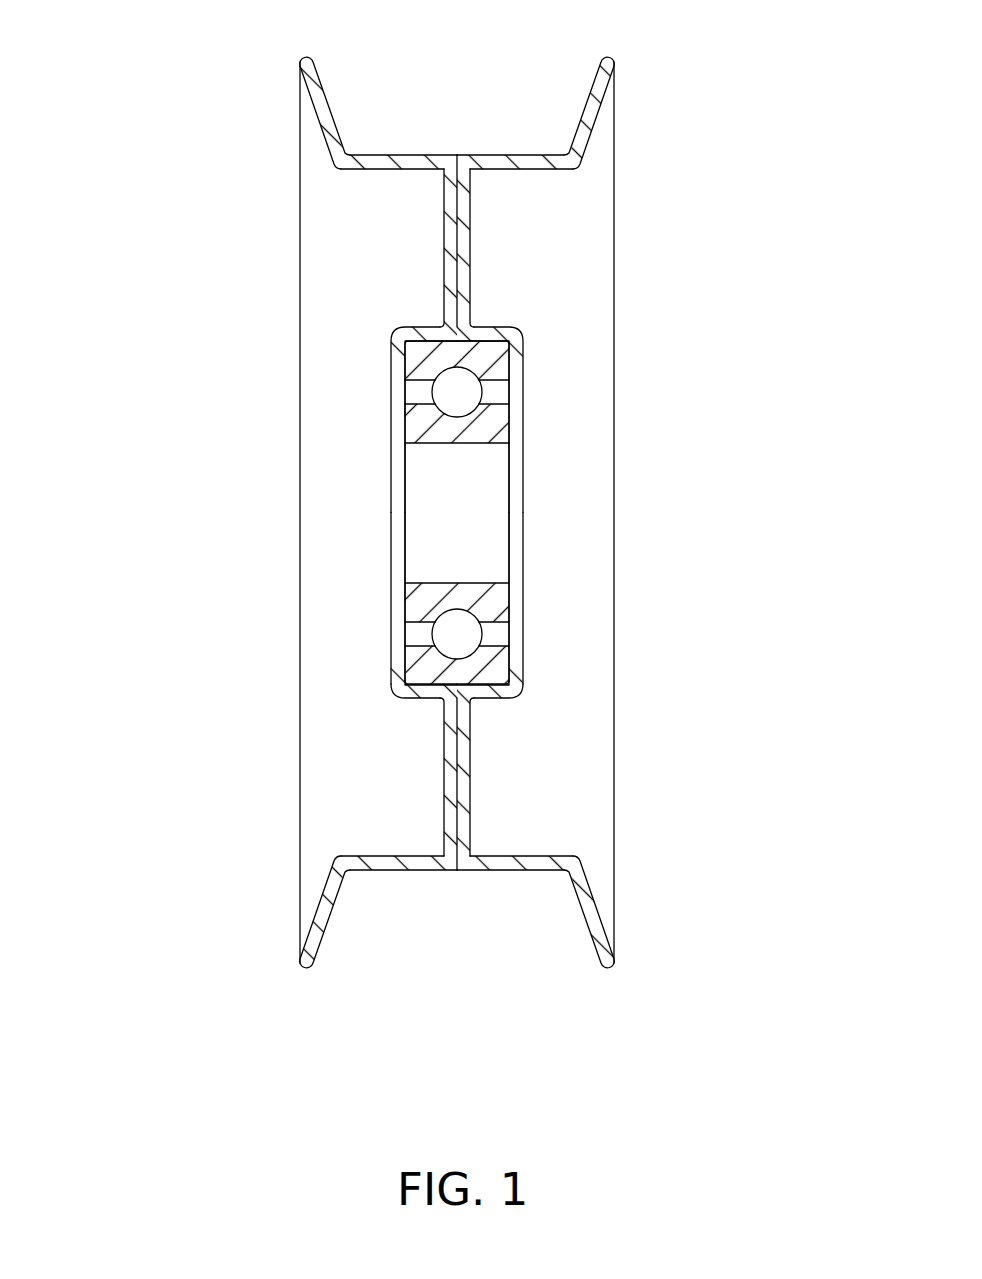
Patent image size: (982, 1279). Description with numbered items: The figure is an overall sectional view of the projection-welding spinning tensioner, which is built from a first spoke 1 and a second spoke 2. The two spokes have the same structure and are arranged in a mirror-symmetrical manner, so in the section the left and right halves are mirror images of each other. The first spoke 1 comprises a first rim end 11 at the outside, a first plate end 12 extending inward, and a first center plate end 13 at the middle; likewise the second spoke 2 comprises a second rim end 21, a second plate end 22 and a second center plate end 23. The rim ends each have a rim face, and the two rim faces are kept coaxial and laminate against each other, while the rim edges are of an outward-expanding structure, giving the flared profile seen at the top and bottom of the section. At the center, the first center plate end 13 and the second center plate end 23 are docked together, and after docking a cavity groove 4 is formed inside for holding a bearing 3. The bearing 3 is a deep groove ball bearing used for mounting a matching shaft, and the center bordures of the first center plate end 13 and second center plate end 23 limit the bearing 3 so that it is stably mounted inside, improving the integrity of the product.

The first spoke 1 is at (259, 549).
The first rim end 11 is at (272, 512).
The first plate end 12 is at (443, 240).
The first center plate end 13 is at (273, 512).
The second spoke 2 is at (660, 555).
The second rim end 21 is at (651, 512).
The second plate end 22 is at (471, 250).
The second center plate end 23 is at (660, 512).
The bearing 3 is at (482, 626).
The cavity groove 4 is at (515, 511).